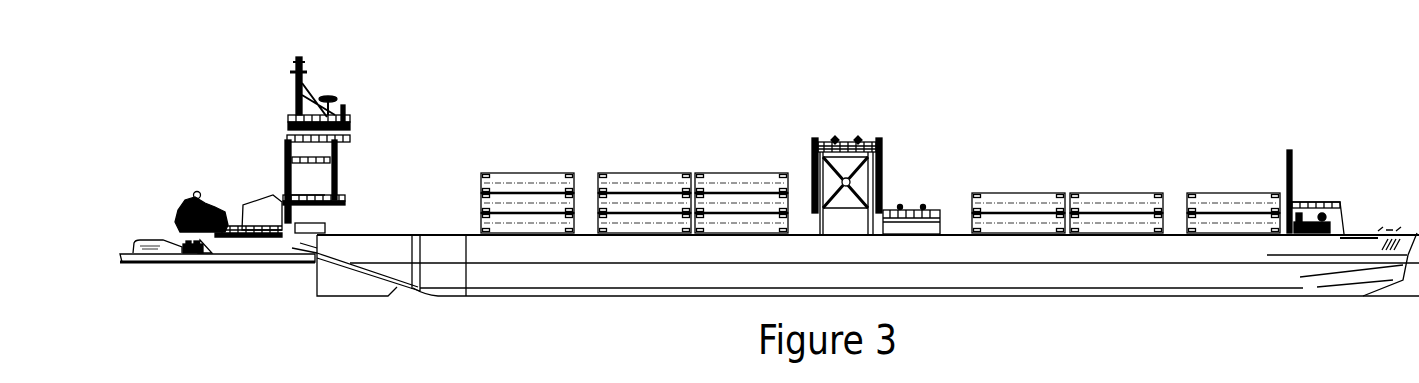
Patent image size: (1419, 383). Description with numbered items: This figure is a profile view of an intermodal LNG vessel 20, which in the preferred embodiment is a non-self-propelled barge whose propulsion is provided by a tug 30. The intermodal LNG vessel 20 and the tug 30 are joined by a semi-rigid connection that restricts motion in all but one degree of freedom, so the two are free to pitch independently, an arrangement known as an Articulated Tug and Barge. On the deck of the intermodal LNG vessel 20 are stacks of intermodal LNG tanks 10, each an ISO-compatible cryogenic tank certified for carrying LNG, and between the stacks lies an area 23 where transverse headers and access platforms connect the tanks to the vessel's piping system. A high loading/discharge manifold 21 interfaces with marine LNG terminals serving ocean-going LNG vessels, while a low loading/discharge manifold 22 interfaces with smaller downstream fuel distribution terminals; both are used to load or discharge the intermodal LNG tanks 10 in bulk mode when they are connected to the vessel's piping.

The intermodal LNG tank 10 is at (525, 179).
The intermodal LNG vessel 20 is at (617, 275).
The high loading/discharge manifold 21 is at (847, 138).
The low loading/discharge manifold 22 is at (912, 208).
The area 23 is at (583, 215).
The tug 30 is at (336, 103).